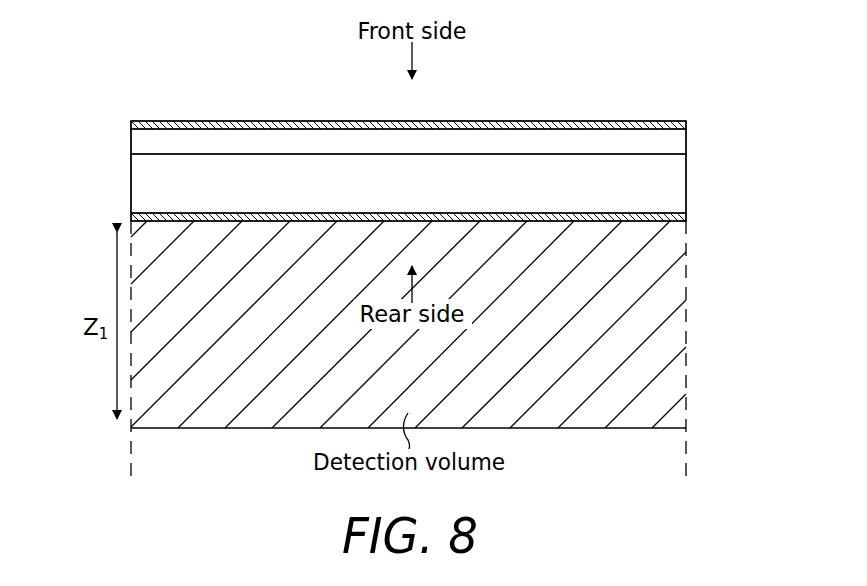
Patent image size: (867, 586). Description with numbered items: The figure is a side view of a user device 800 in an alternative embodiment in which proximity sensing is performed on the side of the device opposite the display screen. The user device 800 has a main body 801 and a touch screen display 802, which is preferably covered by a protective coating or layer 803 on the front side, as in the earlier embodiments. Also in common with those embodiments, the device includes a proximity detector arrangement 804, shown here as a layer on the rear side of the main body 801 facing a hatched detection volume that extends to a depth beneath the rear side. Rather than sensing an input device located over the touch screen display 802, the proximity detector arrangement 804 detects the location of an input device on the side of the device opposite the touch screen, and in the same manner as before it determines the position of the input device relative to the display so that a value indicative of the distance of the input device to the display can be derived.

The user device 800 is at (134, 104).
The main body 801 is at (131, 183).
The touch screen display 802 is at (131, 140).
The protective coating or layer 803 is at (686, 126).
The proximity detector arrangement 804 is at (686, 217).